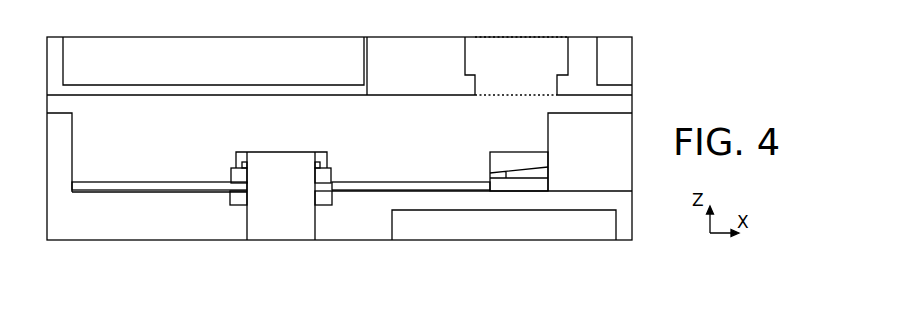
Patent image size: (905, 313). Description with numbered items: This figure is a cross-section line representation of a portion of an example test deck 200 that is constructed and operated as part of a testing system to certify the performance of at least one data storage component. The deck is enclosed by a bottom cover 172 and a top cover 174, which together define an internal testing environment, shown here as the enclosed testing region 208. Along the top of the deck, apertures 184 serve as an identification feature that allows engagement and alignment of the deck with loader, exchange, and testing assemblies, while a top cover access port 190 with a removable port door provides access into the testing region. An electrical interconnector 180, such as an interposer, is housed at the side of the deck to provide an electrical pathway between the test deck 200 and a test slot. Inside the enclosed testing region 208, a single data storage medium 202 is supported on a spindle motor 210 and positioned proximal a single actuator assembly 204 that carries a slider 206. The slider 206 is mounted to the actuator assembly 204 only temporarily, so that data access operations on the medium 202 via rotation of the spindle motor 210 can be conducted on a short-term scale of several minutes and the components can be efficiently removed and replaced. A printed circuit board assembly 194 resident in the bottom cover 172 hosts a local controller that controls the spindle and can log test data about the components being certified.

The test deck 200 is at (104, 22).
The apertures 184 is at (231, 70).
The bottom cover 172 is at (429, 76).
The top cover access port 190 is at (528, 29).
The electrical interconnector 180 is at (625, 36).
The enclosed testing region 208 is at (331, 124).
The top cover 174 is at (90, 230).
The data storage medium 202 is at (120, 181).
The spindle motor 210 is at (299, 204).
The slider 206 is at (528, 160).
The actuator assembly 204 is at (608, 162).
The printed circuit board assembly 194 is at (523, 234).